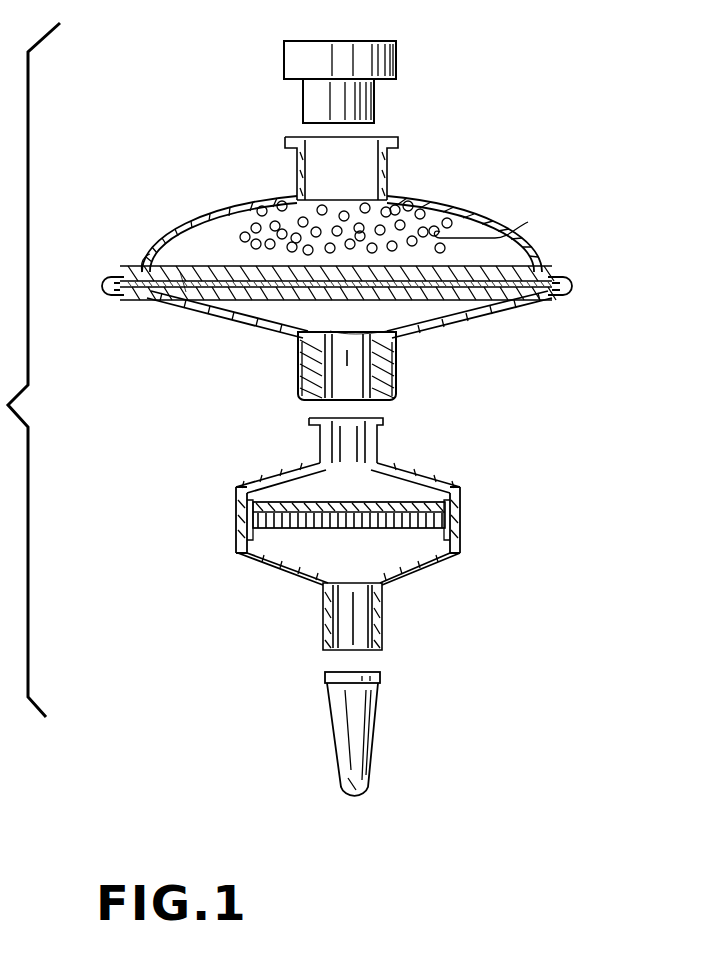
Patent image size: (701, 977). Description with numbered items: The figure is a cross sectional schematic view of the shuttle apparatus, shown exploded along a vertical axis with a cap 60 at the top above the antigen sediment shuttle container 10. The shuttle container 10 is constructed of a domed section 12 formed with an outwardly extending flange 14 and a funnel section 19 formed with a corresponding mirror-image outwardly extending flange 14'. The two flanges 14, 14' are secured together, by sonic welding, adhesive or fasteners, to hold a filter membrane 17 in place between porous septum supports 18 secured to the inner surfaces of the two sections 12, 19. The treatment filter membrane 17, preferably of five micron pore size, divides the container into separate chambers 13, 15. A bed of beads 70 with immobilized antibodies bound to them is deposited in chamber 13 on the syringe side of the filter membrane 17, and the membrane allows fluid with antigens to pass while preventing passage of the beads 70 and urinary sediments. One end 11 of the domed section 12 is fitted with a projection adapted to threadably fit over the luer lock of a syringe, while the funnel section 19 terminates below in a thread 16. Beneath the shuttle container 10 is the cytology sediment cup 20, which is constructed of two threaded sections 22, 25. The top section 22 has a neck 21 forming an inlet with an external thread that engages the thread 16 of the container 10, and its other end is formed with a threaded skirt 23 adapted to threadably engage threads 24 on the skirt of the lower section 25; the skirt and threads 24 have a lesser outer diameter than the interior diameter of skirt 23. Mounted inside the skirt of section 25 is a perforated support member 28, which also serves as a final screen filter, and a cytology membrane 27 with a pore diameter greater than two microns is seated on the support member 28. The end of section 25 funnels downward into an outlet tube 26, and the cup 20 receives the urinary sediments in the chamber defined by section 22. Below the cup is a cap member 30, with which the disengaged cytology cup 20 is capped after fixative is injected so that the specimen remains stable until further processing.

The antigen sediment shuttle container 10 is at (281, 148).
The end of domed section 11 is at (386, 162).
The domed section 12 is at (472, 207).
The chamber 13 is at (498, 220).
The outwardly extending flange 14 is at (371, 270).
The outwardly extending flange 14' is at (90, 305).
The chamber 15 is at (437, 313).
The thread 16 is at (396, 382).
The filter membrane 17 is at (149, 266).
The porous septum supports 18 is at (186, 276).
The funnel section 19 is at (417, 309).
The cytology sediment cup 20 is at (308, 422).
The neck 21 is at (374, 437).
The top section 22 is at (440, 472).
The threaded skirt 23 is at (460, 487).
The threads 24 is at (458, 518).
The section 25 is at (452, 558).
The outlet tube 26 is at (383, 624).
The cytology membrane 27 is at (276, 500).
The perforated support member 28 is at (284, 534).
The cap member 30 is at (330, 731).
The cap 60 is at (277, 52).
The beads 70 is at (424, 218).